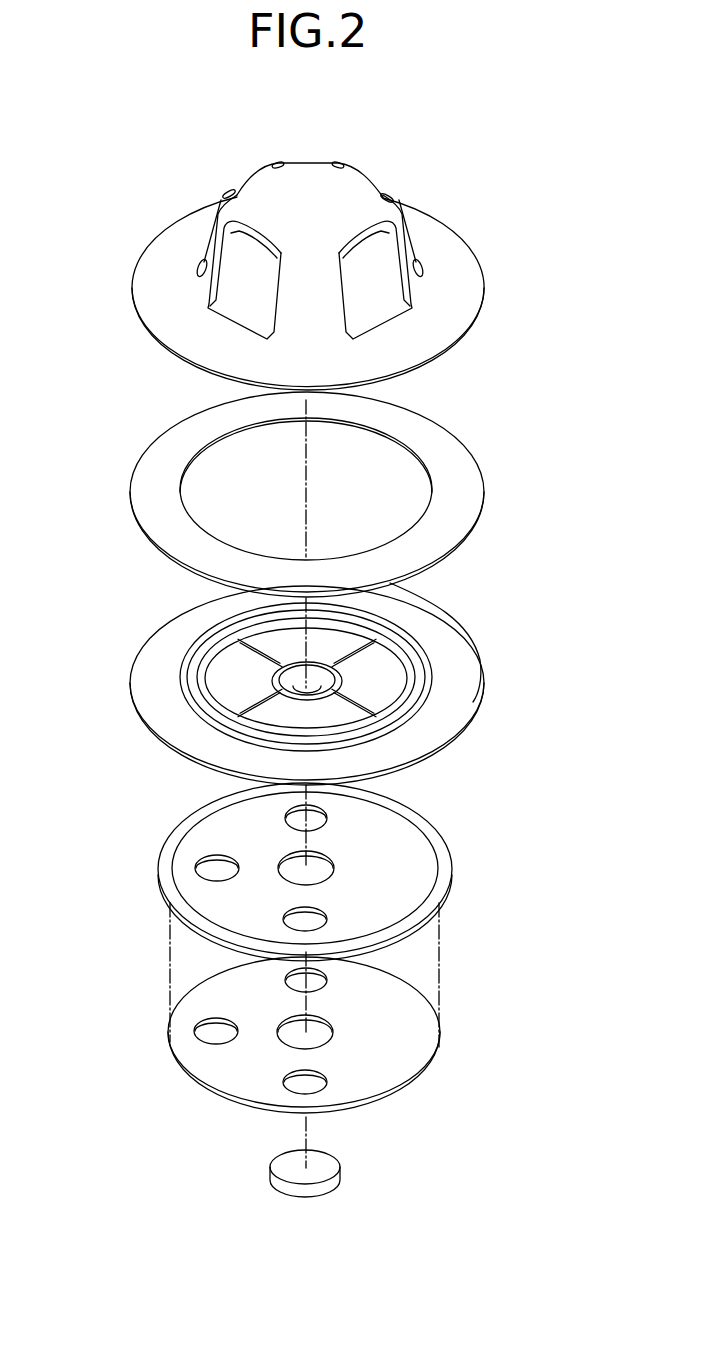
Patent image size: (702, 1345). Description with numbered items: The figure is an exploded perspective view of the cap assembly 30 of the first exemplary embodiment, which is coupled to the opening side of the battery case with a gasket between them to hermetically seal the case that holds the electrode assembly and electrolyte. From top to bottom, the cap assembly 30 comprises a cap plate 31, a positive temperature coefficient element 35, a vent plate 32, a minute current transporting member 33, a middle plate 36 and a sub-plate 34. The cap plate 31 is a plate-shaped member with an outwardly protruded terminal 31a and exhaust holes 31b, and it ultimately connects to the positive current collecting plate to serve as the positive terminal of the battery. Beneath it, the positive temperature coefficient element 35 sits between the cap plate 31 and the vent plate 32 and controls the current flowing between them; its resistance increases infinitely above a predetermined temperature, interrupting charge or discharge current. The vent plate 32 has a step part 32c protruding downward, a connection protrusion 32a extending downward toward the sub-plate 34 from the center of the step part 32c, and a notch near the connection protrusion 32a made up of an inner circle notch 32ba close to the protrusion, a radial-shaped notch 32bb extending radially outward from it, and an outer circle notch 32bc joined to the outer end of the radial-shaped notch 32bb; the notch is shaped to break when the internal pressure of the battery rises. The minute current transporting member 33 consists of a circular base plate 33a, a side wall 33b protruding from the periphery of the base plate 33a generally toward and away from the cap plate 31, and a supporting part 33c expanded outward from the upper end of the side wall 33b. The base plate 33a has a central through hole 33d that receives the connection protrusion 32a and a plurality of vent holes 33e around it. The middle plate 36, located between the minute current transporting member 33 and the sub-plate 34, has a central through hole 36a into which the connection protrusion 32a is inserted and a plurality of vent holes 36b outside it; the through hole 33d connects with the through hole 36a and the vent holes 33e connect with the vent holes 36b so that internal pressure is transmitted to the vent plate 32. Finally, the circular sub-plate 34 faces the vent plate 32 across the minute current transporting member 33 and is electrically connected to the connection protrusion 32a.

The cap assembly 30 is at (150, 127).
The cap plate 31 is at (457, 223).
The terminal 31a is at (350, 197).
The exhaust holes 31b is at (385, 238).
The positive temperature coefficient element 35 is at (448, 458).
The vent plate 32 is at (472, 721).
The connection protrusion 32a is at (343, 672).
The inner circle notch 32ba is at (317, 676).
The radial-shaped notch 32bb is at (207, 675).
The outer circle notch 32bc is at (418, 684).
The step part 32c is at (378, 640).
The minute current transporting member 33 is at (450, 888).
The base plate 33a is at (393, 862).
The side wall 33b is at (220, 936).
The supporting part 33c is at (173, 832).
The through hole 33d is at (322, 855).
The vent holes 33e is at (297, 913).
The middle plate 36 is at (407, 1003).
The through hole 36a is at (330, 1020).
The vent holes 36b is at (322, 1075).
The sub-plate 34 is at (323, 1167).